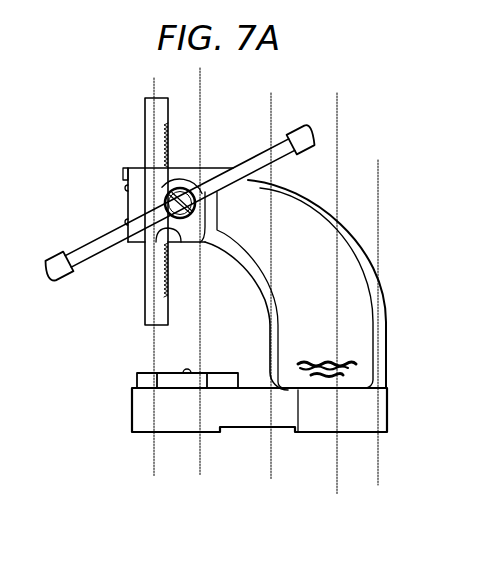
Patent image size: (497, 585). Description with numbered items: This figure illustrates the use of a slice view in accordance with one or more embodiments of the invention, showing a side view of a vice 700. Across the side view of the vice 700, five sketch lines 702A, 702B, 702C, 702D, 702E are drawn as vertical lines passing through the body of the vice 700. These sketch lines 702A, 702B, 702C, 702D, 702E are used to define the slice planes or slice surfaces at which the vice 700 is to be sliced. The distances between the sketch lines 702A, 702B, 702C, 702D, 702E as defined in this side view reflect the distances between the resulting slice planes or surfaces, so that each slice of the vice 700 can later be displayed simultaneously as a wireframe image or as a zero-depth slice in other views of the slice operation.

The vice 700 is at (131, 415).
The sketch line 702A is at (378, 485).
The sketch line 702B is at (337, 495).
The sketch line 702C is at (271, 480).
The sketch line 702D is at (200, 476).
The sketch line 702E is at (154, 476).